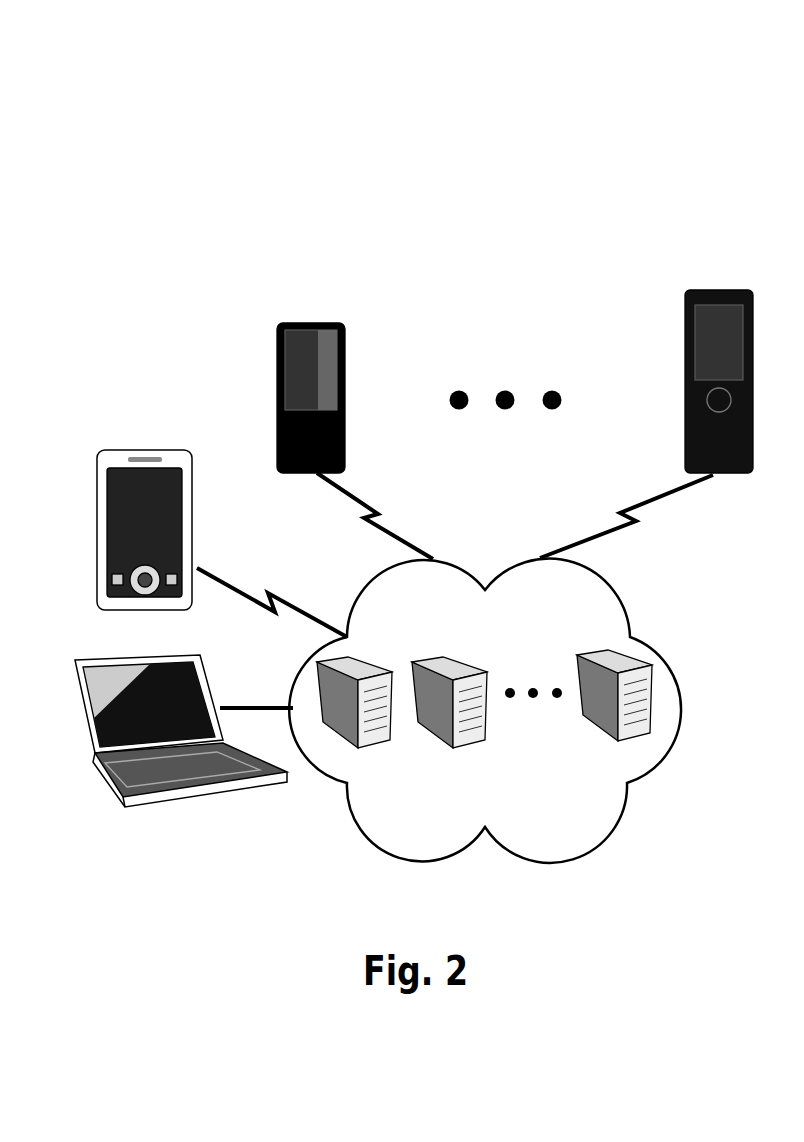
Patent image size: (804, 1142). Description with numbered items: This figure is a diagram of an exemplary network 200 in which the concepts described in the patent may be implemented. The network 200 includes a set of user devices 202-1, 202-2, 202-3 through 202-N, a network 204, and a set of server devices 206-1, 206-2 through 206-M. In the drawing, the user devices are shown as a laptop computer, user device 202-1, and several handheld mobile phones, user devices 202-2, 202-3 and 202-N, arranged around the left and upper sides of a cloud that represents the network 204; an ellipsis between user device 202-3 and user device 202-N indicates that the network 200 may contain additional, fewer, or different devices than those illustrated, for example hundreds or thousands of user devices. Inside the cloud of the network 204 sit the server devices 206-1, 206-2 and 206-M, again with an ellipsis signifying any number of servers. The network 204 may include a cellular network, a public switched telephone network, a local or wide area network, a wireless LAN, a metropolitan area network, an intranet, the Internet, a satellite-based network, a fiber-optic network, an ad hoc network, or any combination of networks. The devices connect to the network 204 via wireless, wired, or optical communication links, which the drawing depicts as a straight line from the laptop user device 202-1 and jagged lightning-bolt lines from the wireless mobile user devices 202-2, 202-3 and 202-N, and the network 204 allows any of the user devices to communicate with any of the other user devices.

The network 200 is at (140, 92).
The user device 202-1 is at (82, 692).
The user device 202-2 is at (98, 495).
The user device 202-3 is at (287, 353).
The user device 202-N is at (698, 325).
The network 204 is at (683, 708).
The server device 206-1 is at (354, 717).
The server device 206-2 is at (449, 717).
The server device 206-M is at (614, 710).